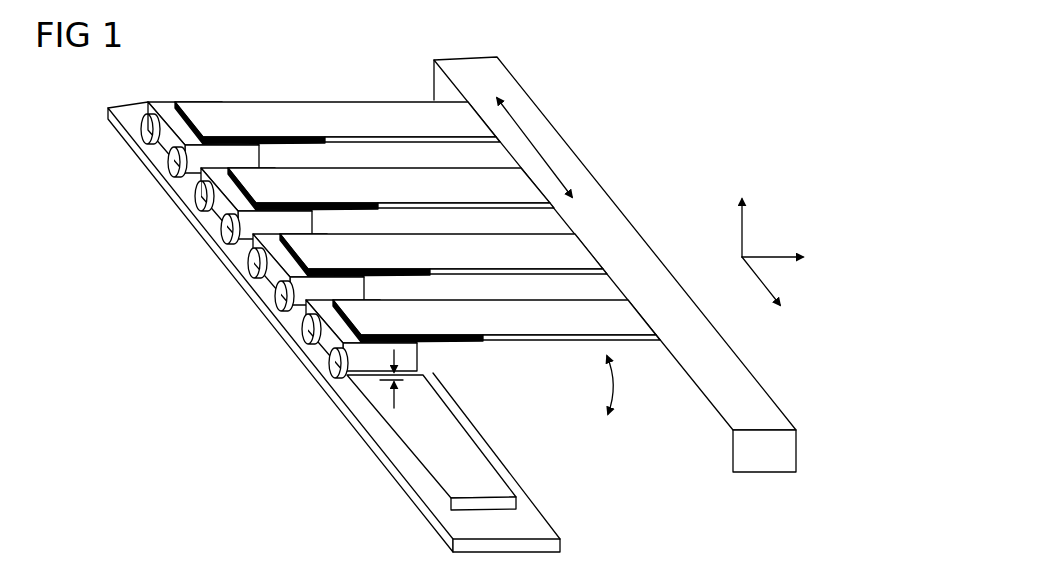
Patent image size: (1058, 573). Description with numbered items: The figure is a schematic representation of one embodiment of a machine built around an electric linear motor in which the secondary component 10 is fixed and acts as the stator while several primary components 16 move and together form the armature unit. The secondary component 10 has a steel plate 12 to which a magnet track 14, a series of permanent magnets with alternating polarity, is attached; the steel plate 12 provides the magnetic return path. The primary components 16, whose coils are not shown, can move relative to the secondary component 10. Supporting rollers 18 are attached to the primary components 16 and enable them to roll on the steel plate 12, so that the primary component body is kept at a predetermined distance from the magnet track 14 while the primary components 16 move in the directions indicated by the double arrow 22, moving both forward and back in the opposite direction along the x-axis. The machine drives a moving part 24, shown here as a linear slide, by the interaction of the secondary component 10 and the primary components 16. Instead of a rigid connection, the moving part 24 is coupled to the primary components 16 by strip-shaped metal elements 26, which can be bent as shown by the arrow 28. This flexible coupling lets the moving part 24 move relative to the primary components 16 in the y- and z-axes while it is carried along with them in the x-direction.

The secondary component 10 is at (270, 441).
The steel plate 12 is at (560, 542).
The magnet track 14 is at (490, 483).
The primary component 16 is at (170, 104).
The supporting roller 18 is at (141, 131).
The arrows 22 is at (532, 143).
The moving part 24 is at (787, 448).
The strip-shaped metal element 26 is at (362, 178).
The arrow 28 is at (612, 385).